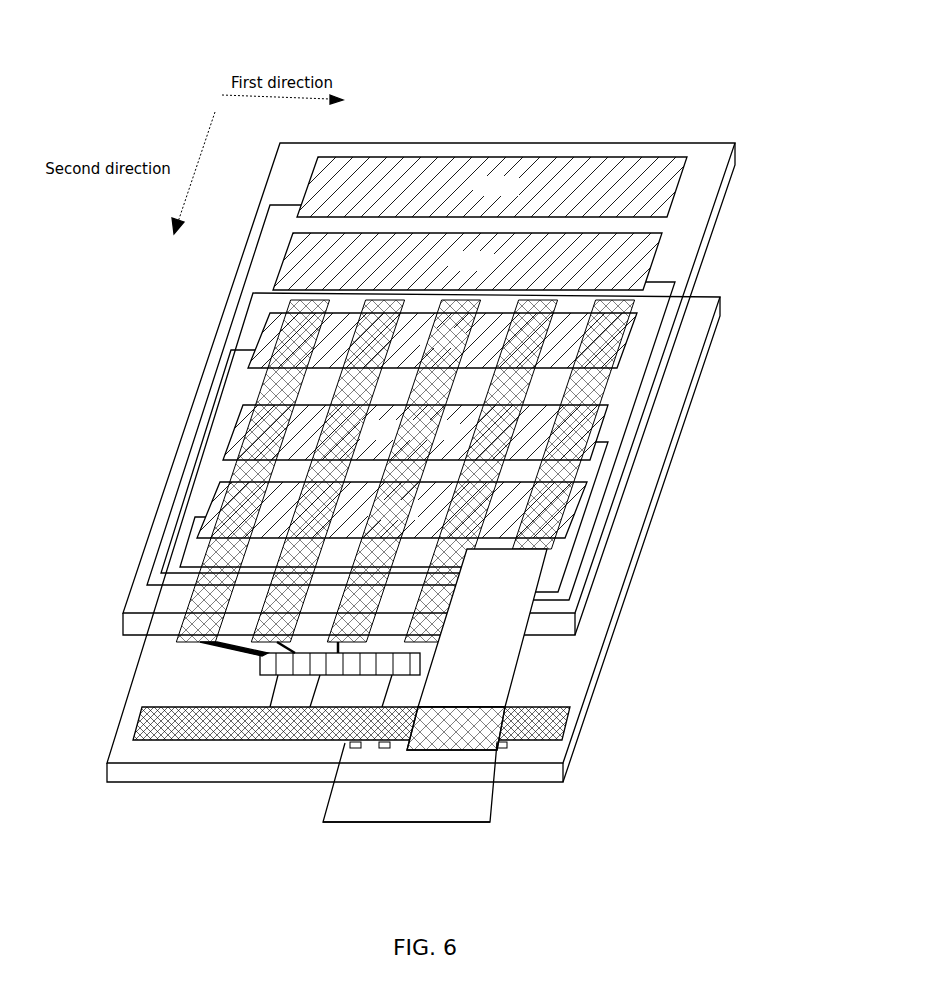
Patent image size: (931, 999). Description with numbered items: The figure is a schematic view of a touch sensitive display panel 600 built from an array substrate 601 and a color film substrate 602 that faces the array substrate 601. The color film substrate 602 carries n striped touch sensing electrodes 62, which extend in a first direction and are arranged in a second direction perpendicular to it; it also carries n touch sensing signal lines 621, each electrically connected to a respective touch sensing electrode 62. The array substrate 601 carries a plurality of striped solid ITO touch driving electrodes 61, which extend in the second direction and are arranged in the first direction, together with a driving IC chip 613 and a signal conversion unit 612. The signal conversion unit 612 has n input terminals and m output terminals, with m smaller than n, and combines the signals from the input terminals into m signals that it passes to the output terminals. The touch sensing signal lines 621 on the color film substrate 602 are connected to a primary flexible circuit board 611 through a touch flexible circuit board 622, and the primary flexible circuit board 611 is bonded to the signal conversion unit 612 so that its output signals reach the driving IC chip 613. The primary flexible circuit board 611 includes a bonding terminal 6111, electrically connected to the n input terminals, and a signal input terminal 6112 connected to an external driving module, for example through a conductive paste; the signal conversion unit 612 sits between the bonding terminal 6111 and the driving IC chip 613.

The touch sensitive display panel 600 is at (743, 30).
The array substrate 601 is at (673, 412).
The color film substrate 602 is at (715, 173).
The touch driving electrodes 61 is at (612, 400).
The touch sensing electrodes 62 is at (522, 193).
The primary flexible circuit board 611 is at (485, 797).
The bonding terminal 6111 is at (365, 823).
The signal input terminal 6112 is at (372, 743).
The signal conversion unit 612 is at (197, 733).
The driving IC chip 613 is at (260, 660).
The touch sensing signal lines 621 is at (182, 443).
The touch flexible circuit board 622 is at (507, 655).